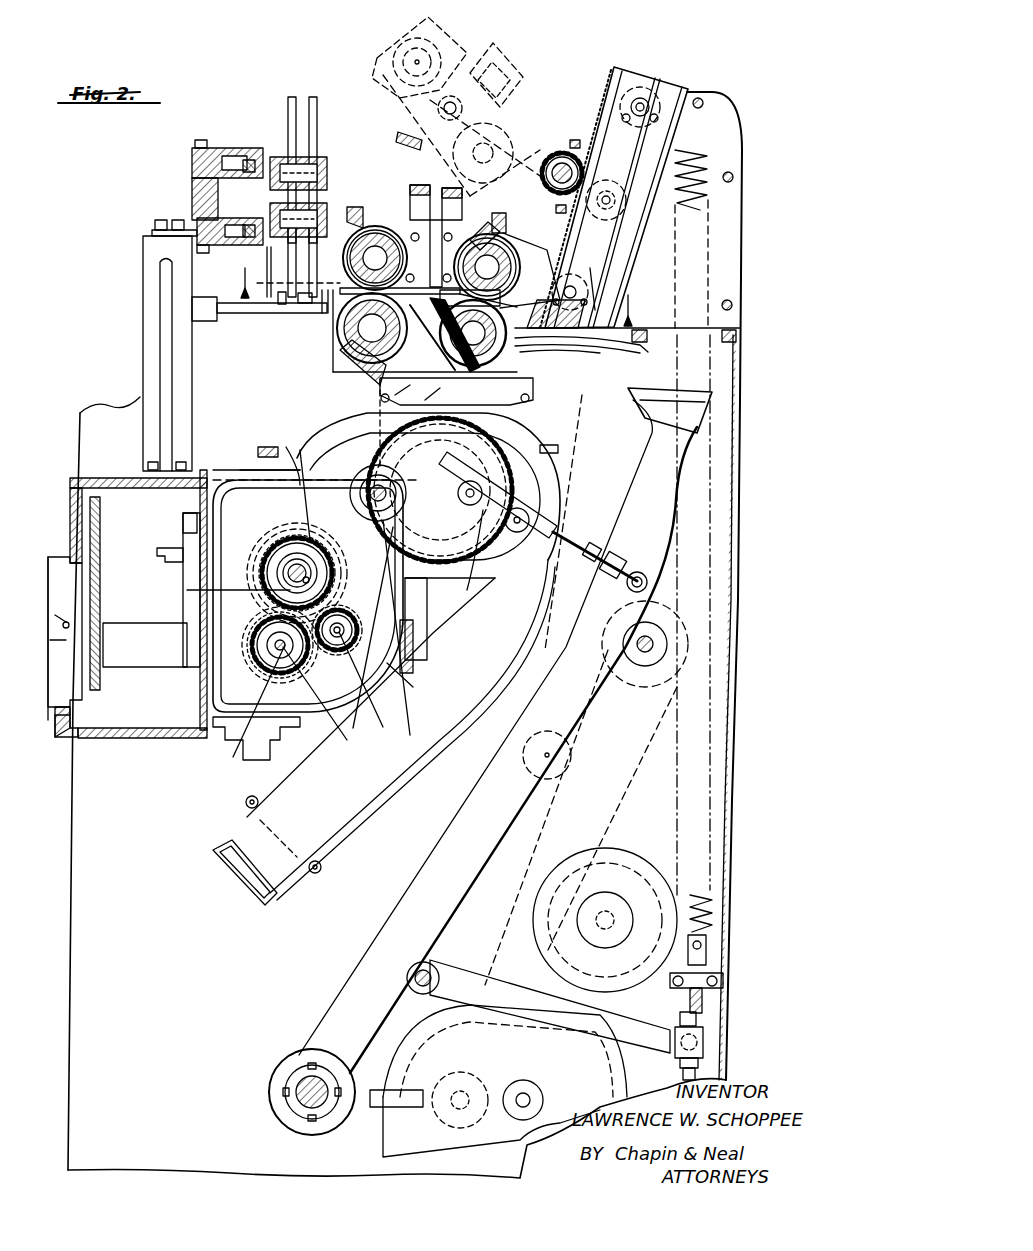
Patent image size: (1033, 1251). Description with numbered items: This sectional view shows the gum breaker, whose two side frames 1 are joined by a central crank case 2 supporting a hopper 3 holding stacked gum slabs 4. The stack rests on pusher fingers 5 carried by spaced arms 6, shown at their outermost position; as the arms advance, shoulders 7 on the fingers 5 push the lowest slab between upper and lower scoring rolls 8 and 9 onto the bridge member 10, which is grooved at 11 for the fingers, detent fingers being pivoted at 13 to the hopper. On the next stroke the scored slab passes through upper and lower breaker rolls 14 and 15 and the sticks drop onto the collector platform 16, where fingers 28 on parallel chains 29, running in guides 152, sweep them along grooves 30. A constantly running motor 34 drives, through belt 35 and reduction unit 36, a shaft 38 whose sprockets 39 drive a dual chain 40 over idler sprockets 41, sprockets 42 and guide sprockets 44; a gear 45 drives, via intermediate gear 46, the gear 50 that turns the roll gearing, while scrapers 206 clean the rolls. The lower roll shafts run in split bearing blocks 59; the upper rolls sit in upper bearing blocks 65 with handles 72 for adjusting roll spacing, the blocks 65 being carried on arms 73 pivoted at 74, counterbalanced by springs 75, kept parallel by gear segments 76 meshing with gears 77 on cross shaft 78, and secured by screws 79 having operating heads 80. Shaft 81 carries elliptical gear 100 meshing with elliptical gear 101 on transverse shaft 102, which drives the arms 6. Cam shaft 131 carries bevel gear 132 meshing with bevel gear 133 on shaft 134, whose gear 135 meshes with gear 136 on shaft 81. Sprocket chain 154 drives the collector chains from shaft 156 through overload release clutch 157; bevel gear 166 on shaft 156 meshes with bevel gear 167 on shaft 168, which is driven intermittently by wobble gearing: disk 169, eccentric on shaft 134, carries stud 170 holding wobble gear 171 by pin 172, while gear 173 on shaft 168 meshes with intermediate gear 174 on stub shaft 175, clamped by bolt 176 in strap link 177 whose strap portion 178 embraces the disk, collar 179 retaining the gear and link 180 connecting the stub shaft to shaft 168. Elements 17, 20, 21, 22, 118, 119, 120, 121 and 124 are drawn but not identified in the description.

The side frames 1 is at (92, 922).
The central crank case 2 is at (292, 454).
The hopper 3 is at (626, 58).
The gum slabs 4 is at (597, 275).
The pusher fingers 5 is at (615, 350).
The arms 6 is at (660, 453).
The shoulders 7 is at (585, 350).
The upper scoring roll 8 is at (482, 226).
The lower scoring roll 9 is at (432, 386).
The bridge member 10 is at (408, 384).
The grooves 11 is at (473, 333).
The pivot 13 is at (557, 287).
The upper breaker roll 14 is at (319, 282).
The lower breaker roll 15 is at (340, 342).
The collector platform 16 is at (305, 320).
The plate 17 is at (500, 264).
The trough 20 is at (250, 885).
The block 21 is at (360, 205).
The wedge 22 is at (375, 345).
The collector fingers 28 is at (305, 98).
The chains 29 is at (235, 150).
The grooves 30 is at (296, 282).
The motor 34 is at (636, 865).
The belt 35 is at (620, 1056).
The reduction unit 36 is at (385, 1140).
The shaft 38 is at (505, 1066).
The sprockets 39 is at (512, 1115).
The dual chain 40 is at (505, 1045).
The idler sprockets 41 is at (648, 690).
The sprockets 42 is at (290, 452).
The guide sprockets 44 is at (550, 770).
The gear 45 is at (424, 647).
The intermediate gear 46 is at (470, 440).
The gear 50 is at (456, 390).
The split bearing blocks 59 is at (412, 210).
The upper bearing blocks 65 is at (445, 50).
The handles 72 is at (368, 225).
The arms 73 is at (528, 130).
The pivot 74 is at (608, 185).
The counterbalancing springs 75 is at (708, 198).
The gear segments 76 is at (632, 119).
The gears 77 is at (573, 158).
The cross shaft 78 is at (556, 155).
The screws 79 is at (426, 135).
The operating heads 80 is at (500, 70).
The shaft 81 is at (298, 480).
The elliptical gear 100 is at (470, 508).
The second elliptical gear 101 is at (535, 445).
The transverse shaft 102 is at (465, 563).
The lever 118 is at (508, 540).
The link rod 119 is at (585, 552).
The shaft 120 is at (305, 1095).
The arm end 121 is at (295, 1052).
The bearing 124 is at (296, 1075).
The cam shaft 131 is at (172, 546).
The bevel gear 132 is at (275, 555).
The bevel gear 133 is at (284, 558).
The shaft 134 is at (300, 528).
The gear 135 is at (275, 535).
The gear 136 is at (378, 440).
The guides 152 is at (232, 145).
The sprocket chain 154 is at (98, 530).
The shaft 156 is at (60, 622).
The overload release clutch 157 is at (66, 650).
The bevel gear 166 is at (200, 640).
The bevel gear 167 is at (270, 688).
The shaft 168 is at (285, 672).
The disk 169 is at (373, 627).
The stud 170 is at (283, 578).
The wobble gear 171 is at (227, 588).
The pin 172 is at (272, 638).
The gear 173 is at (242, 748).
The intermediate gear 174 is at (340, 634).
The stub shaft 175 is at (350, 657).
The bolt 176 is at (400, 685).
The strap link 177 is at (386, 627).
The strap portion 178 is at (262, 468).
The collar 179 is at (376, 685).
The link 180 is at (360, 725).
The scrapers 206 is at (500, 212).